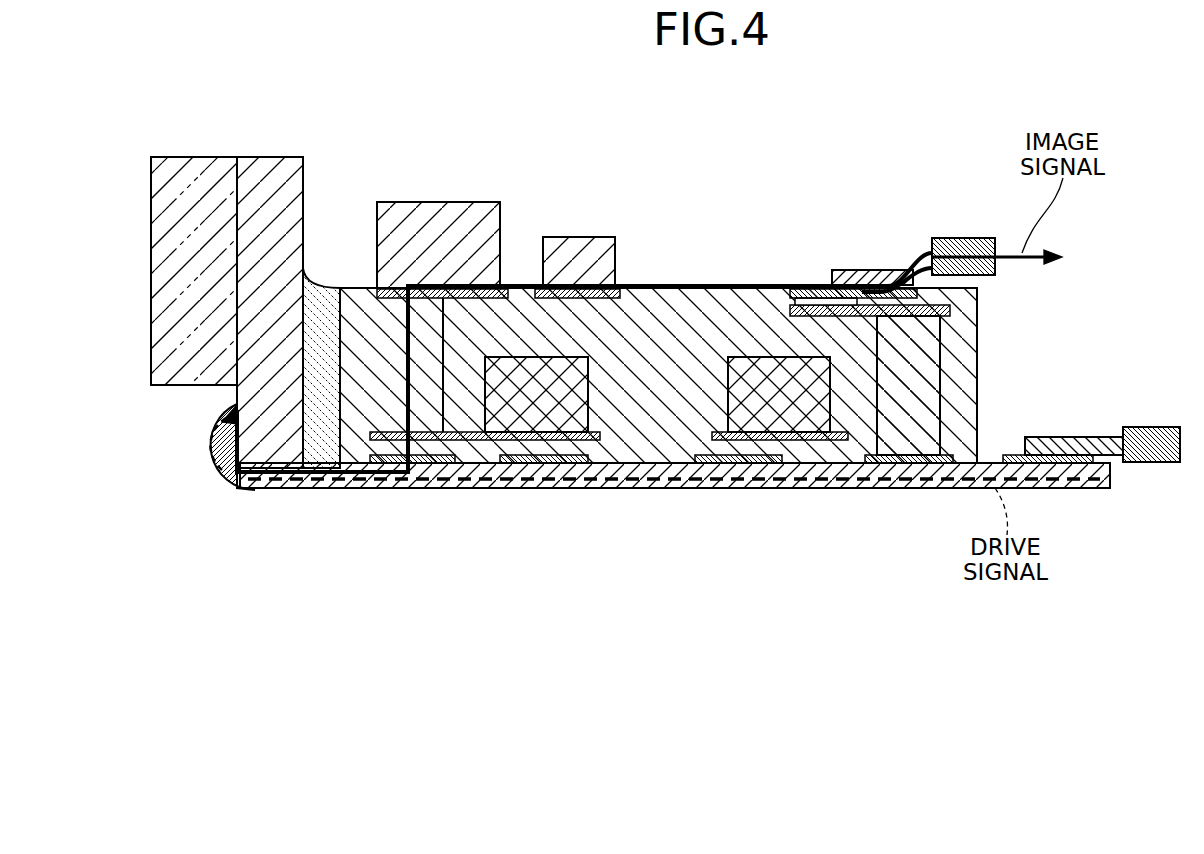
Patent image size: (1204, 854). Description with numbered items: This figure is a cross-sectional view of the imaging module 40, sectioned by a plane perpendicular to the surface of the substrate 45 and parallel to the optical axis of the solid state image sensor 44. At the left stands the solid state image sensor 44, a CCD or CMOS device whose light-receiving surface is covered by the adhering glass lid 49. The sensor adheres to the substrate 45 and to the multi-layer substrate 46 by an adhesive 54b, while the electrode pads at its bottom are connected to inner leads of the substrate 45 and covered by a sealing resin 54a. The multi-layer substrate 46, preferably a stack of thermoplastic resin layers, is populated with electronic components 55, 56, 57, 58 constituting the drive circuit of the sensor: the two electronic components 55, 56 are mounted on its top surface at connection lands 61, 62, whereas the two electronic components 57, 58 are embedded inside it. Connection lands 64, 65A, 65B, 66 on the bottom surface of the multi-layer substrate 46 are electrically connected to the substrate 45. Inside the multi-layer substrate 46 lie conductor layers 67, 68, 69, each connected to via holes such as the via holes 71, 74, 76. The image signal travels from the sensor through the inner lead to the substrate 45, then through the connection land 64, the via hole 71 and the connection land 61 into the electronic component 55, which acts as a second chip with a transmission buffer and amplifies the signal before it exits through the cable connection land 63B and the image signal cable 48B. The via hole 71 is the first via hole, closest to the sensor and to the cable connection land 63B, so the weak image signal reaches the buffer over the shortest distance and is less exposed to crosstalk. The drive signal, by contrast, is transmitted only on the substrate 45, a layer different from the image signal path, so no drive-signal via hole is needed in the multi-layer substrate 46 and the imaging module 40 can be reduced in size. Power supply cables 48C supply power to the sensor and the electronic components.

The imaging module 40 is at (877, 153).
The solid state image sensor 44 is at (277, 453).
The substrate 45 is at (1112, 472).
The multi-layer substrate 46 is at (353, 302).
The image signal cable 48B is at (972, 237).
The power supply cable 48C is at (1145, 425).
The glass lid 49 is at (183, 386).
The sealing resin 54a is at (242, 490).
The adhesive 54b is at (322, 453).
The electronic component 55 is at (441, 215).
The electronic component 56 is at (577, 243).
The electronic component 57 is at (523, 363).
The electronic component 58 is at (752, 363).
The connection land 61 is at (375, 297).
The connection land 62 is at (620, 290).
The cable connection land 63B is at (863, 293).
The connection land 64 is at (425, 460).
The connection land 65A is at (573, 465).
The connection land 65B is at (726, 465).
The connection land 66 is at (920, 460).
The conductor layer 67 is at (472, 433).
The conductor layer 68 is at (812, 443).
The conductor layer 69 is at (913, 293).
The via hole 71 is at (392, 388).
The via hole 74 is at (923, 400).
The via hole 76 is at (810, 287).